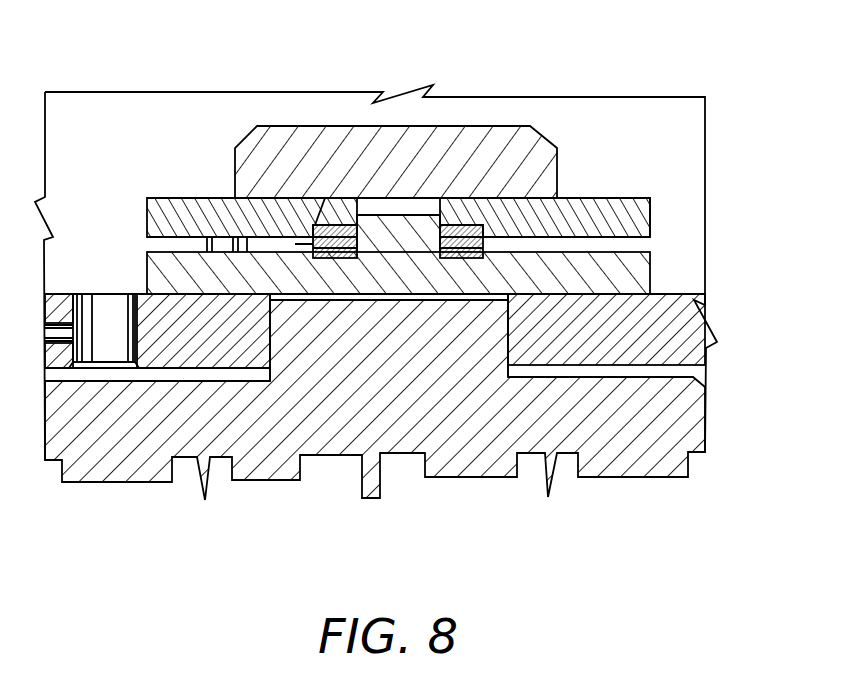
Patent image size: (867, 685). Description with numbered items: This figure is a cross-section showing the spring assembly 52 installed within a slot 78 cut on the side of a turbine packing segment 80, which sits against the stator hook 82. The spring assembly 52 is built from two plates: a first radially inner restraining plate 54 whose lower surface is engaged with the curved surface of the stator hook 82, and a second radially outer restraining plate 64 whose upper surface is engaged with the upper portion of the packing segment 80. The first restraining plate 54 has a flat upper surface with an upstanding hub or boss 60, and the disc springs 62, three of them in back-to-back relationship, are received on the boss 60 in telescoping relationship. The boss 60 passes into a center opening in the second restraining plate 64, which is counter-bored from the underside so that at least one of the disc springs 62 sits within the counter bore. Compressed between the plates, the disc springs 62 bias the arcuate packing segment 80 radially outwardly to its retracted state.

The spring assembly 52 is at (632, 192).
The first radially inner restraining plate 54 is at (173, 277).
The upstanding hub or boss 60 is at (403, 232).
The disc springs 62 is at (327, 230).
The second radially outer restraining plate 64 is at (193, 215).
The slot 78 is at (518, 201).
The packing segment 80 is at (268, 145).
The stator hook 82 is at (690, 329).